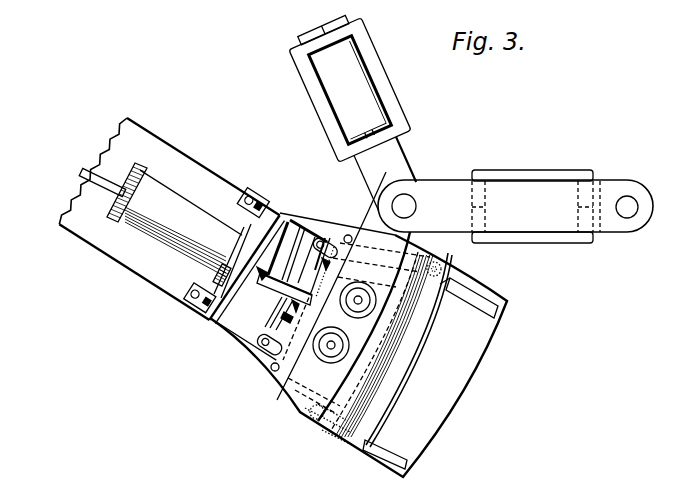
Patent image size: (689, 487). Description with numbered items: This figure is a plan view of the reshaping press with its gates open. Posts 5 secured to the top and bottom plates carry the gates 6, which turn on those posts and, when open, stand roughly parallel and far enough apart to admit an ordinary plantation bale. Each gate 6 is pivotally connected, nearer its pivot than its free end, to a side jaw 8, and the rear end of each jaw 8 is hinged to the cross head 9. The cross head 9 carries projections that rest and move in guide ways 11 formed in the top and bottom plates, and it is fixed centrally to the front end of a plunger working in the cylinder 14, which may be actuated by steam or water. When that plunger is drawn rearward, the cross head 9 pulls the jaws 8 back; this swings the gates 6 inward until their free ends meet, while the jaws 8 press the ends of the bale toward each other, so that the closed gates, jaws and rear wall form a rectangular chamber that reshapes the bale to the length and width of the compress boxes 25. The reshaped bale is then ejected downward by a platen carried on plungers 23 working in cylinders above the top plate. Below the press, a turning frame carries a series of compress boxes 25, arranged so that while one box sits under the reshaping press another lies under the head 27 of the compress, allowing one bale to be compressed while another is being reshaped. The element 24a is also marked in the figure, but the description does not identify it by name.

The posts 5 is at (418, 260).
The gates 6 is at (467, 298).
The side jaw 8 is at (293, 391).
The cross head 9 is at (277, 308).
The guide ways 11 is at (275, 277).
The cylinder 14 is at (155, 224).
The plungers 23 is at (362, 302).
The arm 24a is at (377, 218).
The compress boxes 25 is at (388, 93).
The head 27 is at (536, 206).